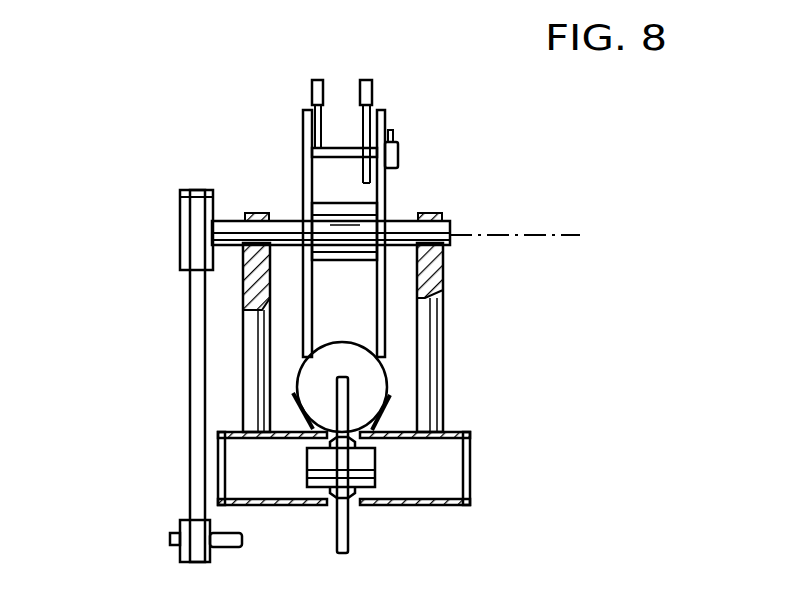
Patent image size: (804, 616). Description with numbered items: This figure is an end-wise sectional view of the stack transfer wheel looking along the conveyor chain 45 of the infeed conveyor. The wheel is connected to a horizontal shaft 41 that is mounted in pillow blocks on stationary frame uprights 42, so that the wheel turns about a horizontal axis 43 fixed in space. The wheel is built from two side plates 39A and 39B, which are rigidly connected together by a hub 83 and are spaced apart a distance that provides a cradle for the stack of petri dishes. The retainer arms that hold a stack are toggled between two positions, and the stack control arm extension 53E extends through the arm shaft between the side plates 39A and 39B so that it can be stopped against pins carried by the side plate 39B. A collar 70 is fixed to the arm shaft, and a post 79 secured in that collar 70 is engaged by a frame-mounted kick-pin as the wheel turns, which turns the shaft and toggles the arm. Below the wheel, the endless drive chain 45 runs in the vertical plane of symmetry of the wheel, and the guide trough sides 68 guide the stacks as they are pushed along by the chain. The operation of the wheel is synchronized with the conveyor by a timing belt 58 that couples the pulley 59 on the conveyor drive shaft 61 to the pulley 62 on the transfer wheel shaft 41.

The wheel side plate 39A is at (302, 125).
The wheel side plate 39B is at (386, 122).
The stack control arm extension 53E is at (362, 180).
The post 79 is at (394, 134).
The collar 70 is at (398, 152).
The hub 83 is at (340, 205).
The horizontal shaft 41 is at (450, 226).
The horizontal axis 43 is at (492, 240).
The stationary frame uprights 42 is at (250, 335).
The guide trough sides 68 is at (296, 422).
The endless drive chain 45 is at (373, 443).
The timing belt 58 is at (190, 433).
The pulley 62 is at (185, 222).
The pulley 59 is at (180, 527).
The conveyor drive shaft 61 is at (225, 547).